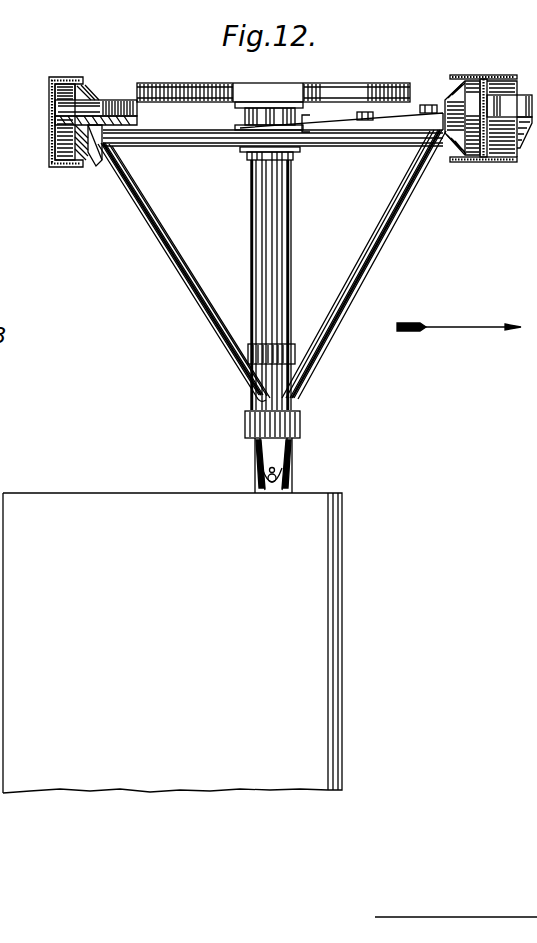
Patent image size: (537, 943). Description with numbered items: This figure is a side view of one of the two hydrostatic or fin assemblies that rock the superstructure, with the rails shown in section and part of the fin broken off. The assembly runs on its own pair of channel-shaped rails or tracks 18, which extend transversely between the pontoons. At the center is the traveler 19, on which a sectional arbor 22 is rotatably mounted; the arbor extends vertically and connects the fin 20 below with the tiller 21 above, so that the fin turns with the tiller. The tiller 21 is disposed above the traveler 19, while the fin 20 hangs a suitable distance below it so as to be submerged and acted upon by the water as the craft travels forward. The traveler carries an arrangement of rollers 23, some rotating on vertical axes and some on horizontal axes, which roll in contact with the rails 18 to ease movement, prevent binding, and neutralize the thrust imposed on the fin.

The rails or tracks 18 is at (49, 99).
The traveler 19 is at (207, 147).
The fin 20 is at (150, 500).
The tiller 21 is at (318, 93).
The sectional arbor 22 is at (286, 219).
The rollers 23 is at (92, 101).